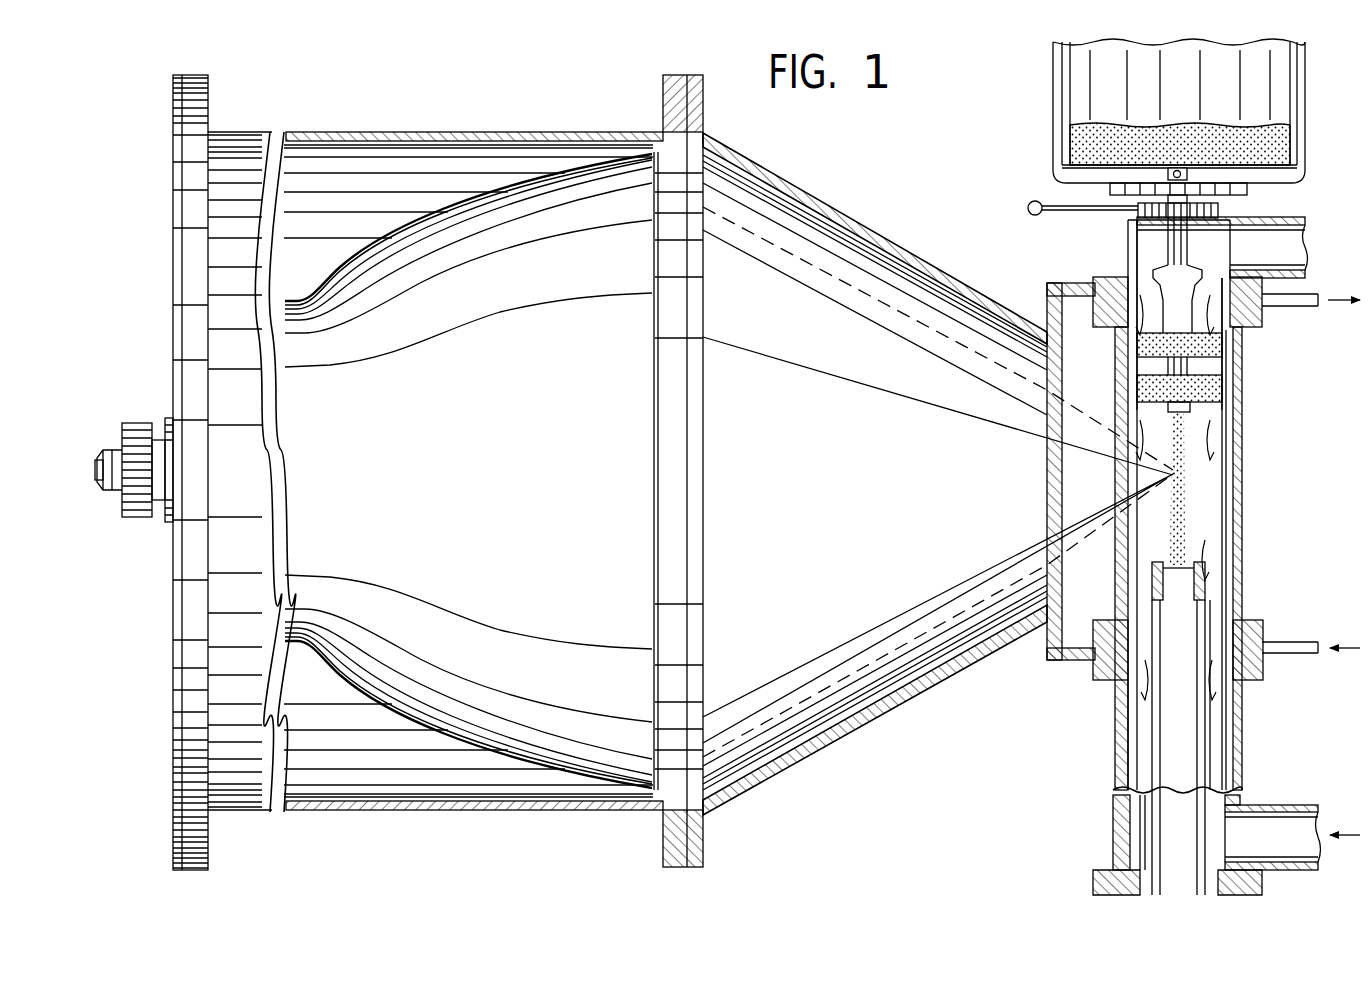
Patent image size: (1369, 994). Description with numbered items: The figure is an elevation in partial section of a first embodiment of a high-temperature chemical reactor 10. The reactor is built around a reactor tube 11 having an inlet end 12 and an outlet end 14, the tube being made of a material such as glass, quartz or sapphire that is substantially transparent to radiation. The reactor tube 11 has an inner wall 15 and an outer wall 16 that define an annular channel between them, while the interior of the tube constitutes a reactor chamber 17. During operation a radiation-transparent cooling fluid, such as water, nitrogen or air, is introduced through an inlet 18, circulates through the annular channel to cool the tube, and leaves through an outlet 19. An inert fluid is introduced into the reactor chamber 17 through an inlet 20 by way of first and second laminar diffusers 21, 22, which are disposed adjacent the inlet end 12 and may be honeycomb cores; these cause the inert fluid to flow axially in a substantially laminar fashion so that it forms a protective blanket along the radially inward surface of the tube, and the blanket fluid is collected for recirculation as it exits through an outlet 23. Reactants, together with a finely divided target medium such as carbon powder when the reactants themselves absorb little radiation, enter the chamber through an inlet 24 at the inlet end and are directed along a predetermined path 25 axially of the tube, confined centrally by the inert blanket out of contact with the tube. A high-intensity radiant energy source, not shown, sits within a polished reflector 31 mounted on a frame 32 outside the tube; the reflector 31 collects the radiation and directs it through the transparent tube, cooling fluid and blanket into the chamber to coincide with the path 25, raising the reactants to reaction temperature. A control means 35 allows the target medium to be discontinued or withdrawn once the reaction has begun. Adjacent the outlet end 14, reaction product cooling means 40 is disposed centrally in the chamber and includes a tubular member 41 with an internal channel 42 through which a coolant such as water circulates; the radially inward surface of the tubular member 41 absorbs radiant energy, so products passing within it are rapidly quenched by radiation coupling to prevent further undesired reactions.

The high-temperature chemical reactor 10 is at (1282, 436).
The reactor tube 11 is at (1228, 388).
The inlet end 12 is at (1128, 248).
The outlet end 14 is at (1128, 902).
The inner wall 15 is at (1218, 548).
The outer wall 16 is at (1240, 506).
The reactor chamber 17 is at (1210, 464).
The inlet 18 is at (1285, 640).
The outlet 19 is at (1290, 310).
The inlet 20 is at (1305, 252).
The first laminar diffuser 21 is at (1137, 342).
The second laminar diffuser 22 is at (1137, 390).
The outlet 23 is at (1305, 855).
The inlet 24 is at (1185, 248).
The path 25 is at (1158, 518).
The polished reflector 31 is at (494, 452).
The frame 32 is at (864, 215).
The control means 35 is at (1031, 202).
The reaction product cooling means 40 is at (1190, 711).
The tubular member 41 is at (1208, 728).
The internal channel 42 is at (1165, 578).